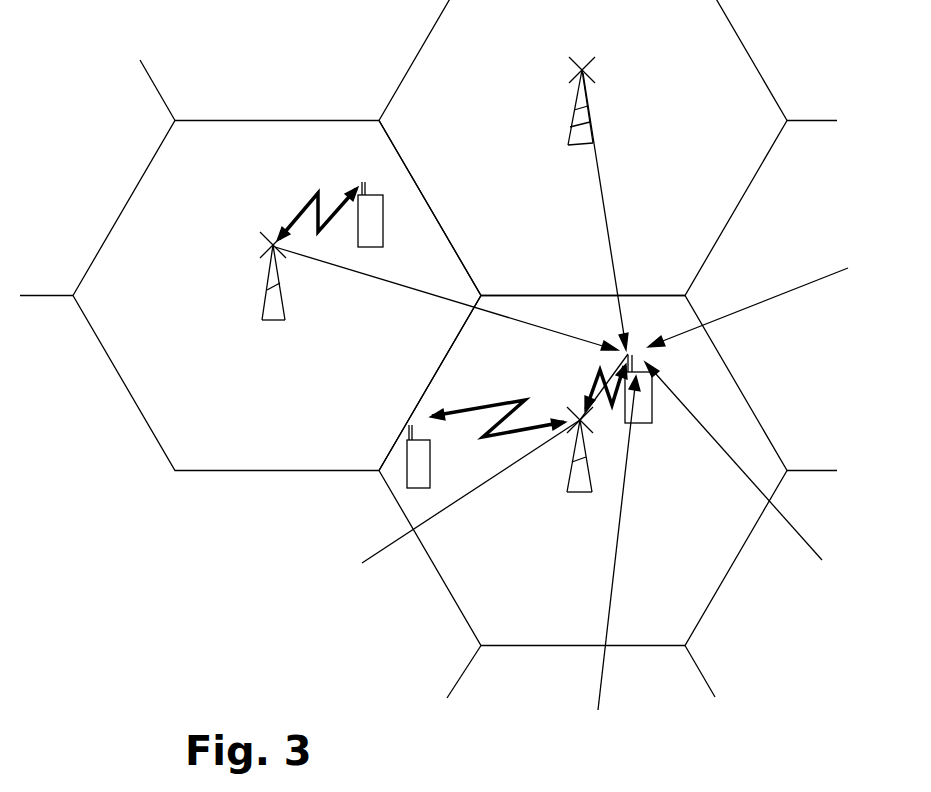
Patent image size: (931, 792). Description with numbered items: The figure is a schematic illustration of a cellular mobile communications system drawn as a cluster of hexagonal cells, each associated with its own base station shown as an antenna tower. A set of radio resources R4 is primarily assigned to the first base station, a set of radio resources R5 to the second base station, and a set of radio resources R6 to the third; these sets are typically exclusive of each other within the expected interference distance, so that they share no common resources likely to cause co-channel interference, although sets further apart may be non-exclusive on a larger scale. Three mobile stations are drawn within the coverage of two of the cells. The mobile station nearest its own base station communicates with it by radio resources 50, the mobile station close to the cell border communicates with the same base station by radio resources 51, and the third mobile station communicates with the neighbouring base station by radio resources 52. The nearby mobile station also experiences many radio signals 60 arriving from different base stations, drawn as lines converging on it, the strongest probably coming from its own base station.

The radio resources 50 is at (592, 388).
The radio resources 51 is at (525, 400).
The radio resources 52 is at (295, 212).
The radio signals 60 is at (612, 225).
The set of radio resources R4 is at (548, 609).
The set of radio resources R5 is at (257, 416).
The set of radio resources R6 is at (535, 225).